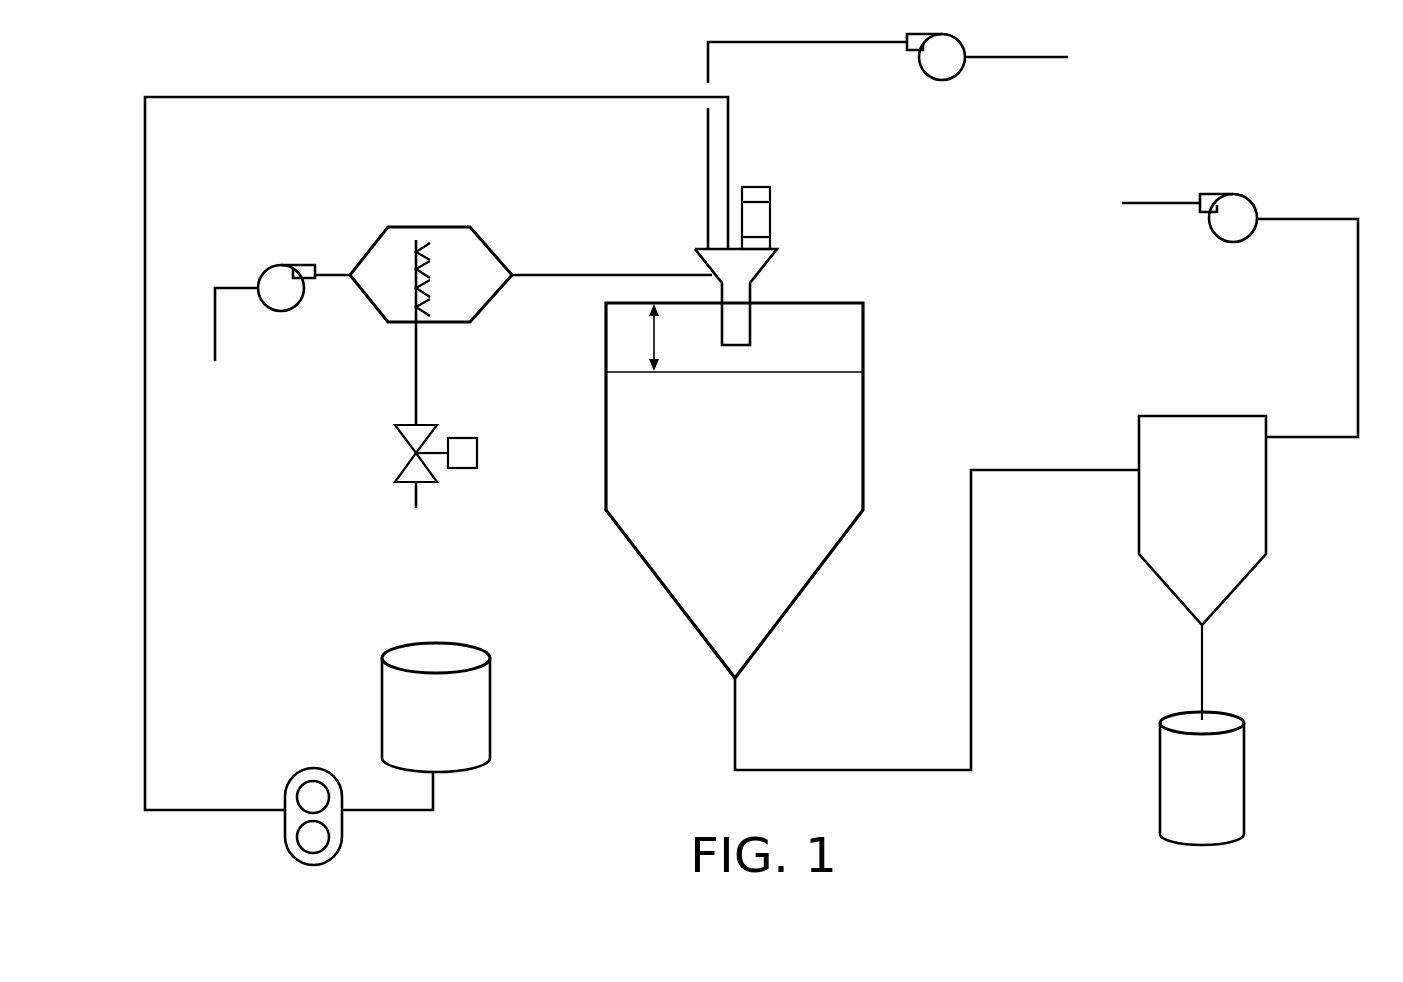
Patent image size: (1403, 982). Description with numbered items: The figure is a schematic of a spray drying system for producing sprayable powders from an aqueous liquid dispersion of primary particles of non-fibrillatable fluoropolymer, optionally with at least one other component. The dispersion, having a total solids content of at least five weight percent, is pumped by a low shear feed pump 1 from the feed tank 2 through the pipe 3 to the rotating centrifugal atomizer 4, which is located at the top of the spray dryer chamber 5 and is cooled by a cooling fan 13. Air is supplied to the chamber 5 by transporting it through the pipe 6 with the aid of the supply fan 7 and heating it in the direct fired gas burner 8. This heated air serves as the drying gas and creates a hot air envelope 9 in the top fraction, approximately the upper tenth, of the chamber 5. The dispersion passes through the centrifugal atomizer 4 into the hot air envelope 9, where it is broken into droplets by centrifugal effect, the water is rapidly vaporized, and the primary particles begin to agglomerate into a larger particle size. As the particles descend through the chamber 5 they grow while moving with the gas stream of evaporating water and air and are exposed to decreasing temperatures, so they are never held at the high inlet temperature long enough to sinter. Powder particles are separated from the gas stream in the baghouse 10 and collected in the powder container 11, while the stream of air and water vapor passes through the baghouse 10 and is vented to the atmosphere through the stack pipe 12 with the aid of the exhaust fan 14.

The low shear feed pump 1 is at (311, 768).
The feed tank 2 is at (447, 735).
The pipe 3 is at (146, 522).
The rotating centrifugal atomizer 4 is at (750, 270).
The spray dryer chamber 5 is at (717, 473).
The pipe 6 is at (335, 272).
The supply fan 7 is at (263, 270).
The direct fired gas burner 8 is at (453, 225).
The hot air envelope 9 is at (652, 335).
The baghouse 10 is at (1224, 509).
The powder container 11 is at (1220, 793).
The stack pipe 12 is at (1305, 219).
The cooling fan 13 is at (950, 80).
The exhaust fan 14 is at (1235, 194).